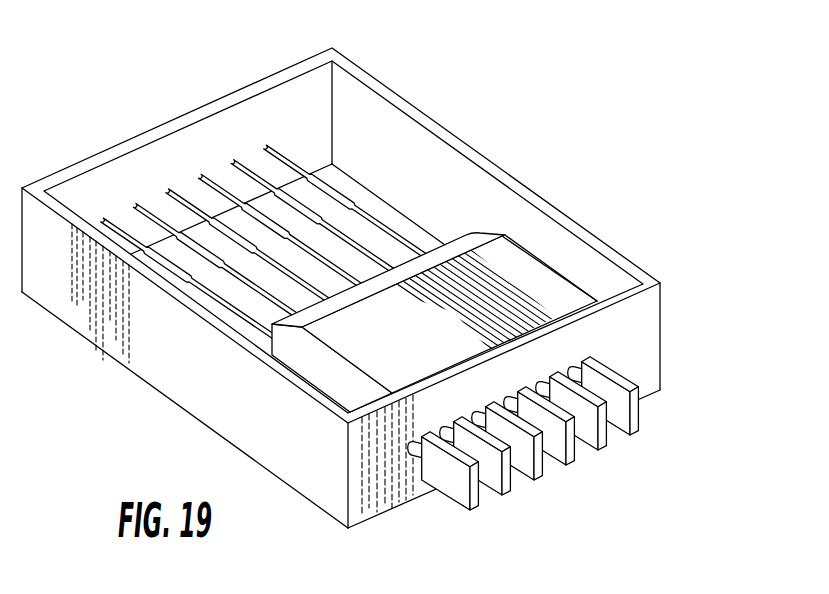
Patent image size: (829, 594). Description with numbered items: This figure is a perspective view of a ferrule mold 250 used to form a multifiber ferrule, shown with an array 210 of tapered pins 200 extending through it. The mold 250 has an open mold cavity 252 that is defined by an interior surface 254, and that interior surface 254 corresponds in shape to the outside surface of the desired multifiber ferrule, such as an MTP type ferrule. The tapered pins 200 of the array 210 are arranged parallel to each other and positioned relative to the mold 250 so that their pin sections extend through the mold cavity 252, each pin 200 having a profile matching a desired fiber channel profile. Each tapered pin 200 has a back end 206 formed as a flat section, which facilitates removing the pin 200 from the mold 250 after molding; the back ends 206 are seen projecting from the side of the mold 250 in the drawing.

The tapered pin 200 is at (349, 226).
The back end 206 is at (633, 425).
The array 210 is at (339, 183).
The mold 250 is at (435, 119).
The mold cavity 252 is at (277, 112).
The interior surface 254 is at (106, 186).